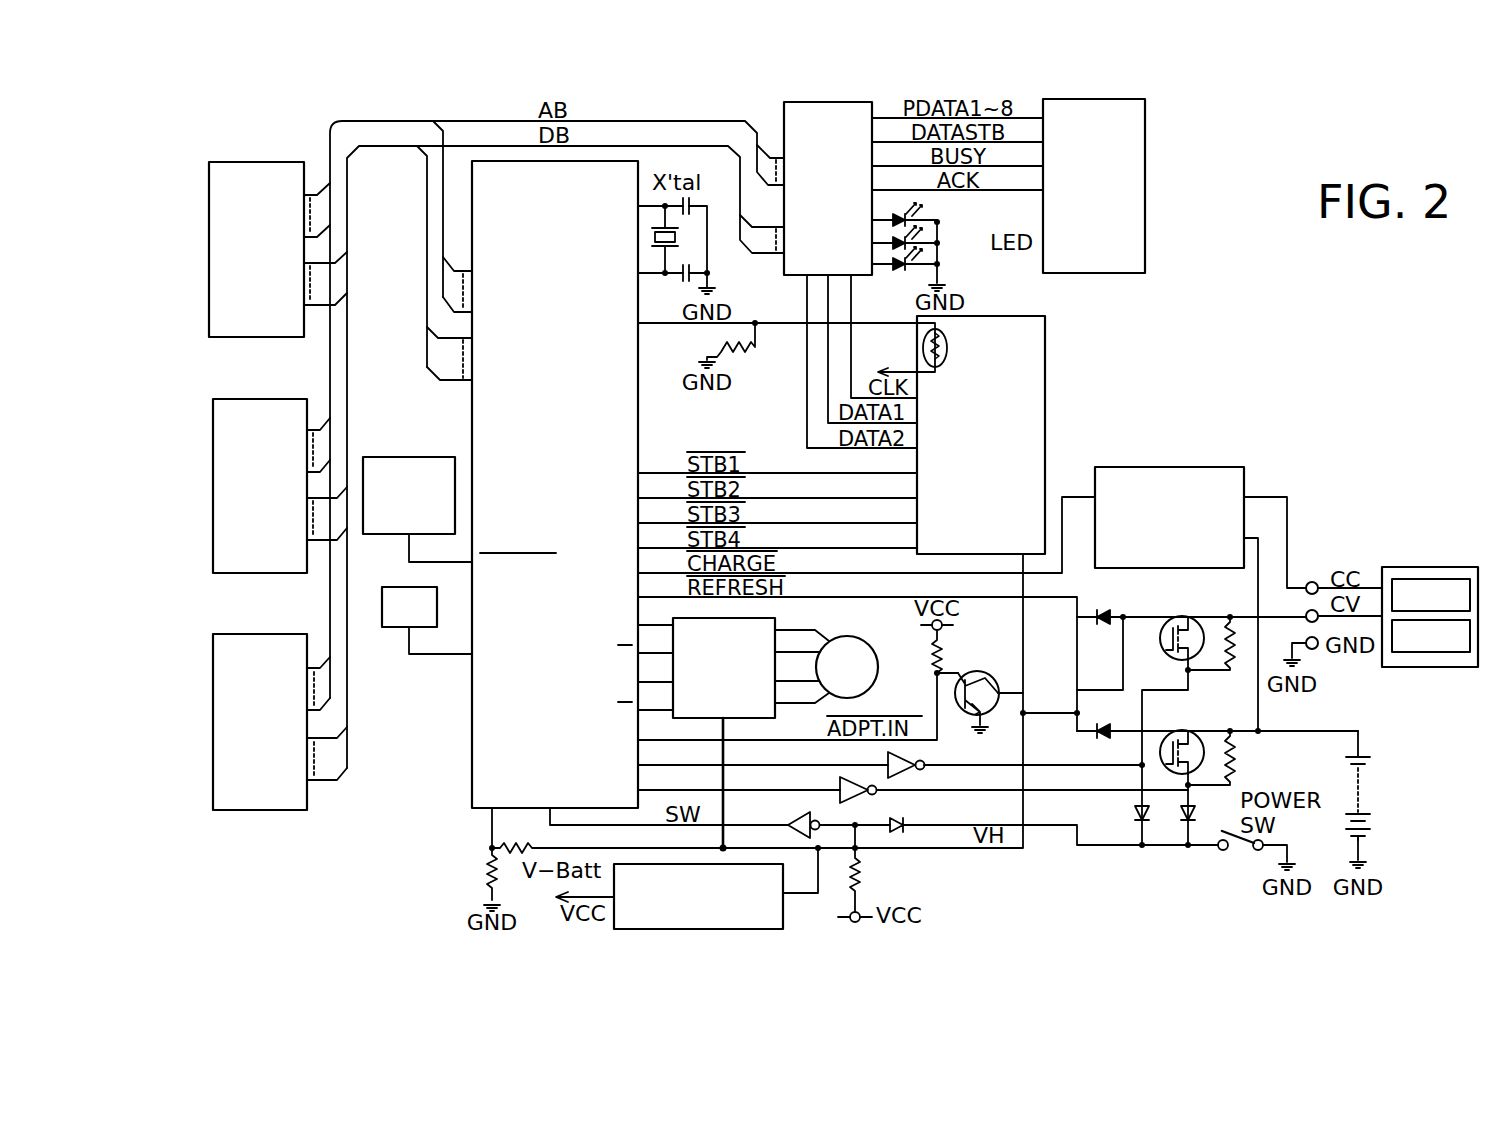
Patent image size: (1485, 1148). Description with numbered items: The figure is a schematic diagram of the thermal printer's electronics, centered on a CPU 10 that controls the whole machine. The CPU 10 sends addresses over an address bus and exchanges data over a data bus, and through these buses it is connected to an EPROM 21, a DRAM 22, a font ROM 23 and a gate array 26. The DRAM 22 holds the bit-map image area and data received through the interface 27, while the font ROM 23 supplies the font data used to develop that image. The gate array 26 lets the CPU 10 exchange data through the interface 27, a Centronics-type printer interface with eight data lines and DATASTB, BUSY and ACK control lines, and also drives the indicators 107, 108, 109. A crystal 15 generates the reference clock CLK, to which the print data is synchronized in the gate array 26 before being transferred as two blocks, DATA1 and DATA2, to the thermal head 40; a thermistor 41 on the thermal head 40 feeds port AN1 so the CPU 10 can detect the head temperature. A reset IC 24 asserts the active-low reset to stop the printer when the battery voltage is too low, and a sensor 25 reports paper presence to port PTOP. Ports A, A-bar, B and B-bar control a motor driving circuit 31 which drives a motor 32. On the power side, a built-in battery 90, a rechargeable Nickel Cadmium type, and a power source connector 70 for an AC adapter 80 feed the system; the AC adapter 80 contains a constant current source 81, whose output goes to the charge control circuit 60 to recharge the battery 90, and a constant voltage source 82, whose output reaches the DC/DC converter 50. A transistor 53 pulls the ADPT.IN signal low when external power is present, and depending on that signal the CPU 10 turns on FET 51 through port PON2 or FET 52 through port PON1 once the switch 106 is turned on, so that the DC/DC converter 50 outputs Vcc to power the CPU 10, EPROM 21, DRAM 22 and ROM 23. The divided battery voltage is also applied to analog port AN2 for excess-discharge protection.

The CPU 10 is at (472, 746).
The crystal 15 is at (677, 239).
The EPROM 21 is at (298, 147).
The DRAM 22 is at (298, 388).
The font ROM 23 is at (298, 623).
The reset IC 24 is at (447, 441).
The sensor 25 is at (382, 608).
The gate array 26 is at (780, 277).
The interface 27 is at (1145, 133).
The motor driving circuit 31 is at (773, 620).
The motor 32 is at (877, 660).
The thermal head 40 is at (1045, 345).
The thermistor 41 is at (947, 357).
The DC/DC converter 50 is at (783, 925).
The FET 51 is at (1180, 616).
The FET 52 is at (1178, 729).
The transistor 53 is at (1005, 665).
The charge control circuit 60 is at (1224, 449).
The power source connector 70 is at (1320, 575).
The AC adapter 80 is at (1430, 607).
The constant current source 81 is at (1462, 579).
The constant voltage source 82 is at (1436, 653).
The built-in battery 90 is at (1362, 817).
The switch 106 is at (1240, 848).
The indicator 107 is at (923, 222).
The indicator 108 is at (923, 245).
The indicator 109 is at (923, 266).